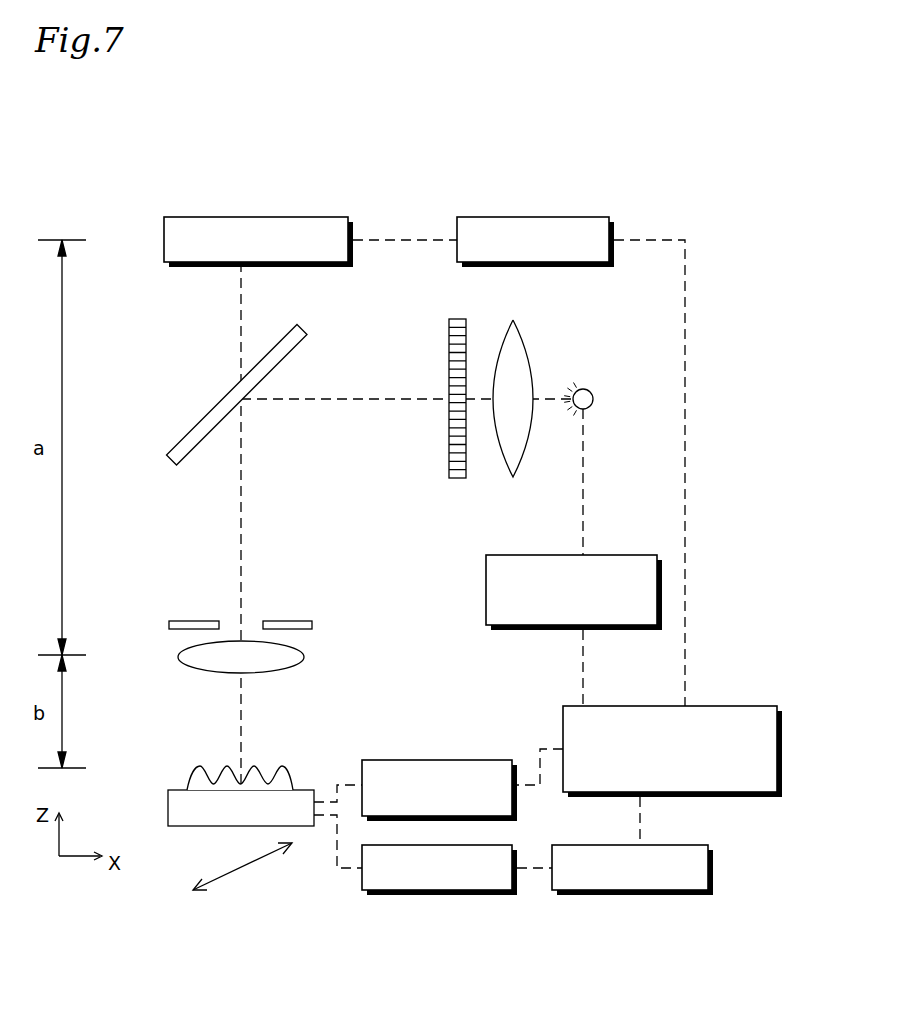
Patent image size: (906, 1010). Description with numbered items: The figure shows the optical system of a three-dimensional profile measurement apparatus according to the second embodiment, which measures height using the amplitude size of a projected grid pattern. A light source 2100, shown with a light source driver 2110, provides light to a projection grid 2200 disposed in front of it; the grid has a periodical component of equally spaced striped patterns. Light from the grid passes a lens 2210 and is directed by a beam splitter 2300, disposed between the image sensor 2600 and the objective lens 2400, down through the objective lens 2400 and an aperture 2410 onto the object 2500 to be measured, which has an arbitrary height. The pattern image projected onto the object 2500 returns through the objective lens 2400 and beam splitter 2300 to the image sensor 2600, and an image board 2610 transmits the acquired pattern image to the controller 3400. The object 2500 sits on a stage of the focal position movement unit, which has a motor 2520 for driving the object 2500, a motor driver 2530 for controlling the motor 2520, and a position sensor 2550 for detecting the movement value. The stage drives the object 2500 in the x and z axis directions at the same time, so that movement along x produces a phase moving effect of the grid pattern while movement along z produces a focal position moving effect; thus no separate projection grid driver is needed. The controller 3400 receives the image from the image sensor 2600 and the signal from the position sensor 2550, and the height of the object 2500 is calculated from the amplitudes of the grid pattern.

The image sensor 2600 is at (236, 217).
The image board 2610 is at (530, 217).
The beam splitter 2300 is at (302, 326).
The projection grid 2200 is at (449, 367).
The lens 2210 is at (527, 352).
The light source 2100 is at (590, 388).
The light source driver 2110 is at (657, 583).
The aperture 2410 is at (312, 625).
The objective lens 2400 is at (304, 654).
The object 2500 is at (187, 781).
The position sensor 2550 is at (435, 760).
The motor 2520 is at (442, 895).
The motor driver 2530 is at (643, 895).
The controller 3400 is at (718, 705).